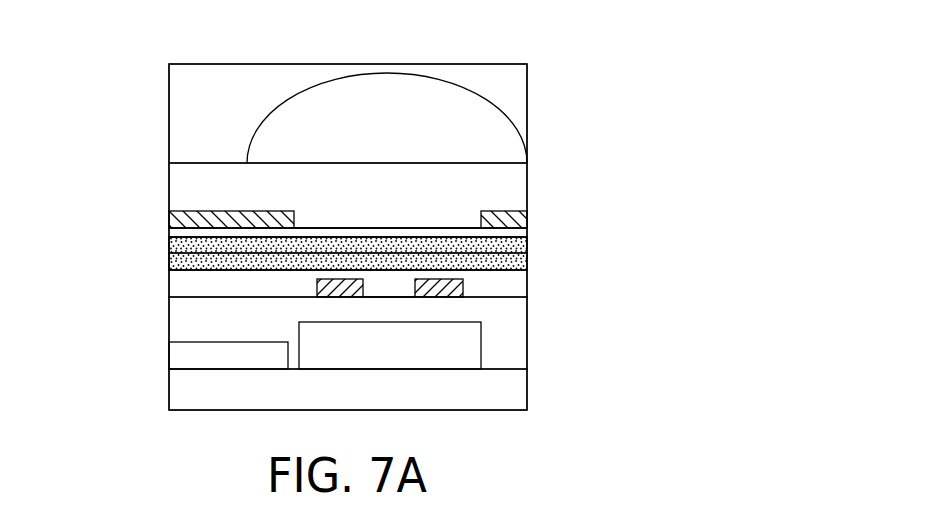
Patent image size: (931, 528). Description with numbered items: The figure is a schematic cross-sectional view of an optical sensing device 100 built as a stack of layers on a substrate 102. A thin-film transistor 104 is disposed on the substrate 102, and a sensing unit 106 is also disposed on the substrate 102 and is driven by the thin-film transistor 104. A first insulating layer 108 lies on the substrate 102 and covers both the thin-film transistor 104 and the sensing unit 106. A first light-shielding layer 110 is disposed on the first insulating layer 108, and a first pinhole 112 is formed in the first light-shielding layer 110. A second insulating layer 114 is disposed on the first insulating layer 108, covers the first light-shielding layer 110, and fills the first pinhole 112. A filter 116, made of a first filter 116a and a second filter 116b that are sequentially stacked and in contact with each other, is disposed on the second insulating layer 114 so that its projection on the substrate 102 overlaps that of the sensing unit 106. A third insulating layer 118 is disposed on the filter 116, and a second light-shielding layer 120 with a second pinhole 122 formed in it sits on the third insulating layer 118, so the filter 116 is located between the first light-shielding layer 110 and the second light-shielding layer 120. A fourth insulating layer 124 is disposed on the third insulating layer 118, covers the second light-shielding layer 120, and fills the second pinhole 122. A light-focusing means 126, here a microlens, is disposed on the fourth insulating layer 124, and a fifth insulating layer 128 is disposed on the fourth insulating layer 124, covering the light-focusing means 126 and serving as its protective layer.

The optical sensing device 100 is at (77, 54).
The substrate 102 is at (522, 390).
The thin-film transistor 104 is at (177, 355).
The sensing unit 106 is at (413, 358).
The first insulating layer 108 is at (522, 352).
The first light-shielding layer 110 is at (463, 290).
The first pinhole 112 is at (390, 282).
The second insulating layer 114 is at (522, 285).
The filter 116 is at (78, 212).
The first filter 116a is at (169, 262).
The second filter 116b is at (169, 247).
The third insulating layer 118 is at (528, 230).
The second light-shielding layer 120 is at (506, 213).
The second pinhole 122 is at (356, 212).
The fourth insulating layer 124 is at (520, 178).
The light-focusing means 126 is at (502, 132).
The fifth insulating layer 128 is at (522, 88).